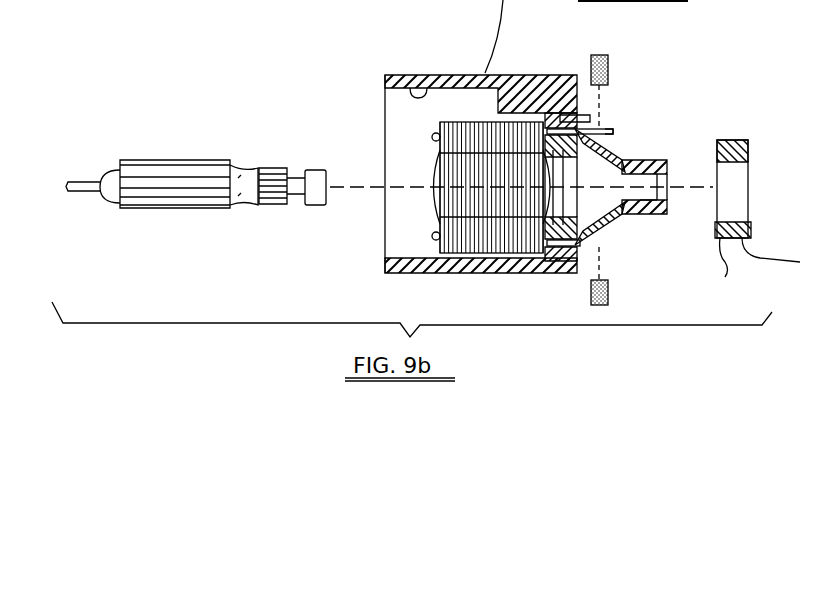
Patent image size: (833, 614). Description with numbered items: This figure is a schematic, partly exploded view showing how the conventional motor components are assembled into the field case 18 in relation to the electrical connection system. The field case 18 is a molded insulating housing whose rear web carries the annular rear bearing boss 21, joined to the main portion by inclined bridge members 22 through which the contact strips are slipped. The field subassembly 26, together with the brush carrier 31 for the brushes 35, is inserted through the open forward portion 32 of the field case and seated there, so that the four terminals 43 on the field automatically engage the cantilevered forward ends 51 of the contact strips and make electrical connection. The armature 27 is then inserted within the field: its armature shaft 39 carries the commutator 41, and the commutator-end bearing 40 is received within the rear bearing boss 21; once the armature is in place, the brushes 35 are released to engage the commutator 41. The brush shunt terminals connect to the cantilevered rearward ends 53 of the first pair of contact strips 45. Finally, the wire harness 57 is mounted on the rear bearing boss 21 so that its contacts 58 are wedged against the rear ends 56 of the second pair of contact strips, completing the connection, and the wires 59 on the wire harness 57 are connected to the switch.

The field case 18 is at (461, 72).
The rear bearing boss 21 is at (673, 167).
The inclined bridge members 22 is at (610, 152).
The field subassembly 26 is at (465, 142).
The armature subassembly 27 is at (185, 178).
The brush carrier 31 is at (572, 113).
The open forward portion 32 is at (413, 96).
The brushes 35 is at (609, 72).
The armature shaft 39 is at (298, 194).
The bearing 40 is at (317, 178).
The commutator 41 is at (277, 178).
The terminals 43 is at (553, 113).
The contact strips (first pair) 45 is at (611, 122).
The cantilevered forward ends 51 is at (575, 117).
The cantilevered rearward ends 53 is at (583, 112).
The rear ends 56 is at (653, 222).
The wire harness 57 is at (745, 150).
The contacts 58 is at (735, 218).
The wires 59 is at (774, 273).